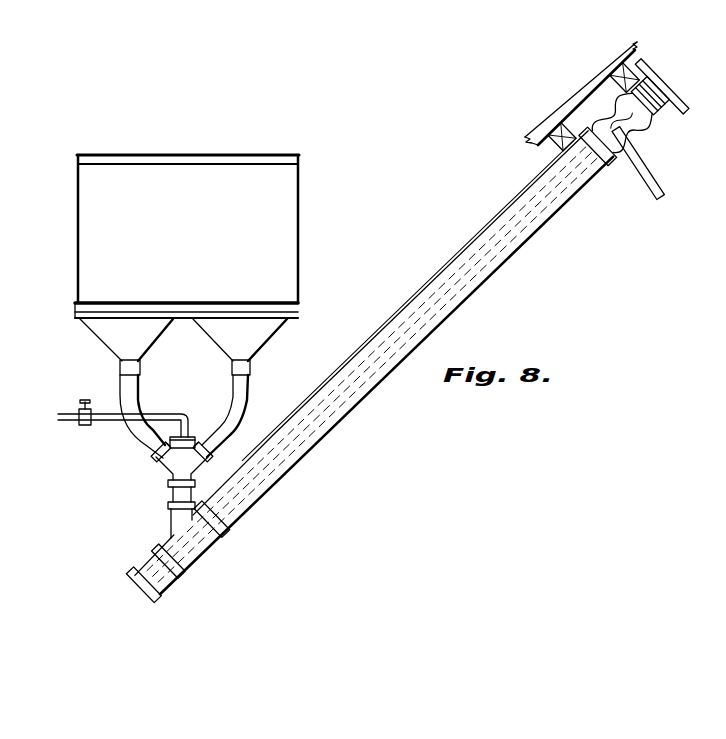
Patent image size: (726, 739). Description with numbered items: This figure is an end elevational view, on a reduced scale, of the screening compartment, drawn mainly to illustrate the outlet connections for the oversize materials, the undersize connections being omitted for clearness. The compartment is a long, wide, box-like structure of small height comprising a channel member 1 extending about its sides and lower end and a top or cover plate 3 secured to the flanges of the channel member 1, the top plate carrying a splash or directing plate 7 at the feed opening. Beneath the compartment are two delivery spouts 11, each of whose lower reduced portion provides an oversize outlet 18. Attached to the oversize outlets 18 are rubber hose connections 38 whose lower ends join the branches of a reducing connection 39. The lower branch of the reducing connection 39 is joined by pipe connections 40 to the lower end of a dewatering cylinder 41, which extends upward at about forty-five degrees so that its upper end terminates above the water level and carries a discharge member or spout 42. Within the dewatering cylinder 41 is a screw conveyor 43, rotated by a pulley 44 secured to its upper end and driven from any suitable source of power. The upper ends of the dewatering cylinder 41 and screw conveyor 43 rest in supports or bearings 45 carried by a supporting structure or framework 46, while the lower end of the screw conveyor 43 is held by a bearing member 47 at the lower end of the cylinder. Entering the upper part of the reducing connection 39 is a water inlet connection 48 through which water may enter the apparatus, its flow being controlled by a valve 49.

The channel member 1 is at (75, 311).
The top or cover plate 3 is at (88, 233).
The splash or directing plate 7 is at (221, 160).
The delivery spout 11 is at (113, 336).
The oversize outlet 18 is at (119, 365).
The rubber hose connection 38 is at (134, 393).
The reducing connection 39 is at (171, 467).
The pipe connections 40 is at (171, 512).
The dewatering cylinder 41 is at (329, 433).
The discharge member or spout 42 is at (648, 176).
The screw conveyor 43 is at (242, 511).
The pulley 44 is at (648, 70).
The supports or bearings 45 is at (633, 96).
The supporting structure or framework 46 is at (574, 95).
The bearing member 47 is at (137, 592).
The water inlet connection 48 is at (184, 432).
The valve 49 is at (87, 426).